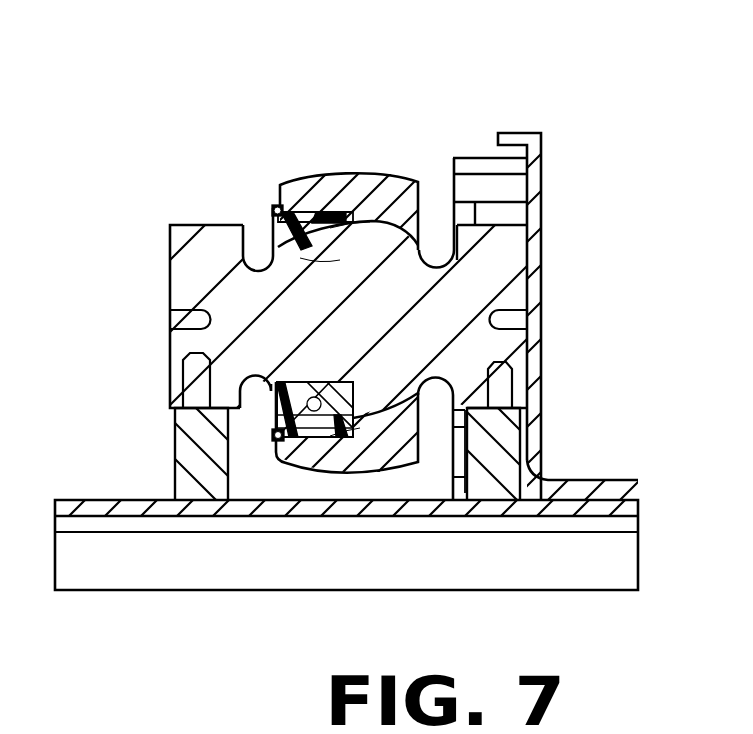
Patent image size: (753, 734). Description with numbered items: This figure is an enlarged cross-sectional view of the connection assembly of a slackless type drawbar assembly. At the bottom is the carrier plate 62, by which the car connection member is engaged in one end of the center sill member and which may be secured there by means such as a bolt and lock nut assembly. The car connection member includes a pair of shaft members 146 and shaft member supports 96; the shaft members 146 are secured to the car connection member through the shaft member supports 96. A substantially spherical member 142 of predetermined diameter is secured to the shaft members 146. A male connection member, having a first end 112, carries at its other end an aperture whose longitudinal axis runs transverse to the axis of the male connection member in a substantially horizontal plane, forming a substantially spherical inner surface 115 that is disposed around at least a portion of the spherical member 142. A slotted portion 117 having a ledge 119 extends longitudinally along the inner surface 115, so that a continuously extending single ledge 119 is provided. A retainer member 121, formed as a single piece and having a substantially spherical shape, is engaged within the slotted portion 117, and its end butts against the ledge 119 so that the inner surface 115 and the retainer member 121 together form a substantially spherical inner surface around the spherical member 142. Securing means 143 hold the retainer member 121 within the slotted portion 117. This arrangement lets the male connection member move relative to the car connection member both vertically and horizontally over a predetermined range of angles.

The carrier plate 62 is at (608, 480).
The shaft member supports 96 is at (192, 451).
The first end of the male connection member 112 is at (397, 220).
The spherical inner surface 115 is at (433, 258).
The slotted portion 117 is at (331, 444).
The ledge 119 is at (338, 222).
The retainer member 121 is at (336, 212).
The spherical member 142 is at (320, 275).
The securing means 143 is at (274, 209).
The shaft members 146 is at (195, 283).